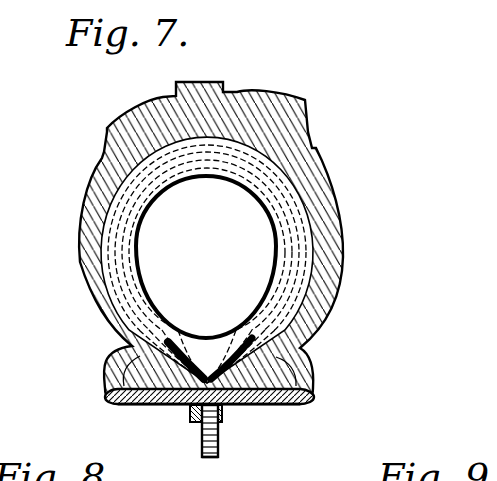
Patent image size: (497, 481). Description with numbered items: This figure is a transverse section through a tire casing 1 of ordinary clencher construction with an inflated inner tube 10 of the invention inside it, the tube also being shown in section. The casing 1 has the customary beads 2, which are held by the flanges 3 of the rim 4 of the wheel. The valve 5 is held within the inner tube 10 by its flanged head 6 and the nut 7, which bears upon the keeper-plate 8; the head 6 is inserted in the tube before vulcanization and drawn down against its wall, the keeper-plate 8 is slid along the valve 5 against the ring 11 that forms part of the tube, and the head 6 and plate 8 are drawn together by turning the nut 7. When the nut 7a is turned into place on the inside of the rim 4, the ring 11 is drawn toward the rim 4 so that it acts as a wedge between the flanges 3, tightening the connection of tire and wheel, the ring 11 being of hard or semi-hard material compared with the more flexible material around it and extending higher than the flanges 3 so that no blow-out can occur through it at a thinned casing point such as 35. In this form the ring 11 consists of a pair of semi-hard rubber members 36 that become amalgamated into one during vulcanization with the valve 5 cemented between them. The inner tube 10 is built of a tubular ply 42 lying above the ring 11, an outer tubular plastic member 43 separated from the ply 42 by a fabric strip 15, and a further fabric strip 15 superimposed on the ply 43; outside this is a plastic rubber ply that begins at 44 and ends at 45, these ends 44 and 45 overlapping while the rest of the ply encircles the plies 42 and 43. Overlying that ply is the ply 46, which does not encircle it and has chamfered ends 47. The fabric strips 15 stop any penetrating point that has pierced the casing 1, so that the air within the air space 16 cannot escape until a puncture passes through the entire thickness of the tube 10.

The casing 1 is at (293, 130).
The beads 2 is at (112, 387).
The flanges 3 is at (122, 354).
The rim 4 is at (242, 404).
The valve 5 is at (220, 456).
The flanged head 6 is at (205, 342).
The nut 7 is at (179, 407).
The nut 7a is at (201, 430).
The keeper-plate 8 is at (230, 408).
The inner tube 10 is at (278, 204).
The ring 11 is at (270, 406).
The fabric strips 15 is at (170, 198).
The air space 16 is at (206, 257).
The casing wall point 35 is at (133, 344).
The members 36 is at (180, 335).
The tubular ply 42 is at (285, 252).
The tubular plastic member 43 is at (305, 199).
The ply end 44 is at (300, 353).
The ply end 45 is at (312, 380).
The ply 46 is at (250, 140).
The chamfered ends 47 is at (105, 303).